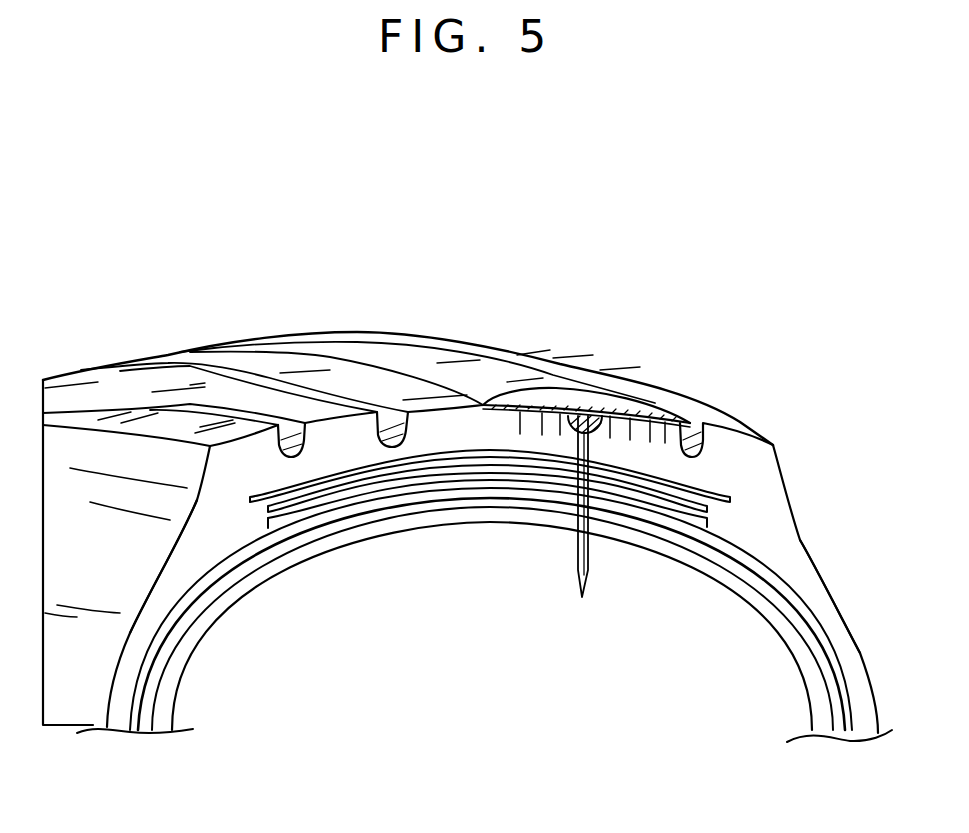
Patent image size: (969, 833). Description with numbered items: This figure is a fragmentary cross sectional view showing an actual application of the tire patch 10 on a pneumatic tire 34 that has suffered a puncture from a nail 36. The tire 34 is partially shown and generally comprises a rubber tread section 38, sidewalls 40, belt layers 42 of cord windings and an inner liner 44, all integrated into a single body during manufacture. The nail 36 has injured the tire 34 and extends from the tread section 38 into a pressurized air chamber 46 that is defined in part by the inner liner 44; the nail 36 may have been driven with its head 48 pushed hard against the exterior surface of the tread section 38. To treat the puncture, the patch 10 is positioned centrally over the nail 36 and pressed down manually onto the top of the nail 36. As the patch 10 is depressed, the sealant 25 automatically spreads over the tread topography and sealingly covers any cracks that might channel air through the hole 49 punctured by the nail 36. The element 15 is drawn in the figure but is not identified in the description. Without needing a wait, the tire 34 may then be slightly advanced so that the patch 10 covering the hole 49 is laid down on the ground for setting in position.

The tire patch 10 is at (660, 397).
The patch 15 is at (607, 393).
The sealant 25 is at (697, 427).
The pneumatic tire 34 is at (323, 332).
The puncturing nail 36 is at (588, 558).
The rubber tread section 38 is at (497, 358).
The sidewalls 40 is at (827, 583).
The belt layers 42 is at (690, 493).
The inner liner 44 is at (290, 567).
The pressurized air chamber 46 is at (515, 690).
The head 48 is at (573, 418).
The hole 49 is at (578, 533).